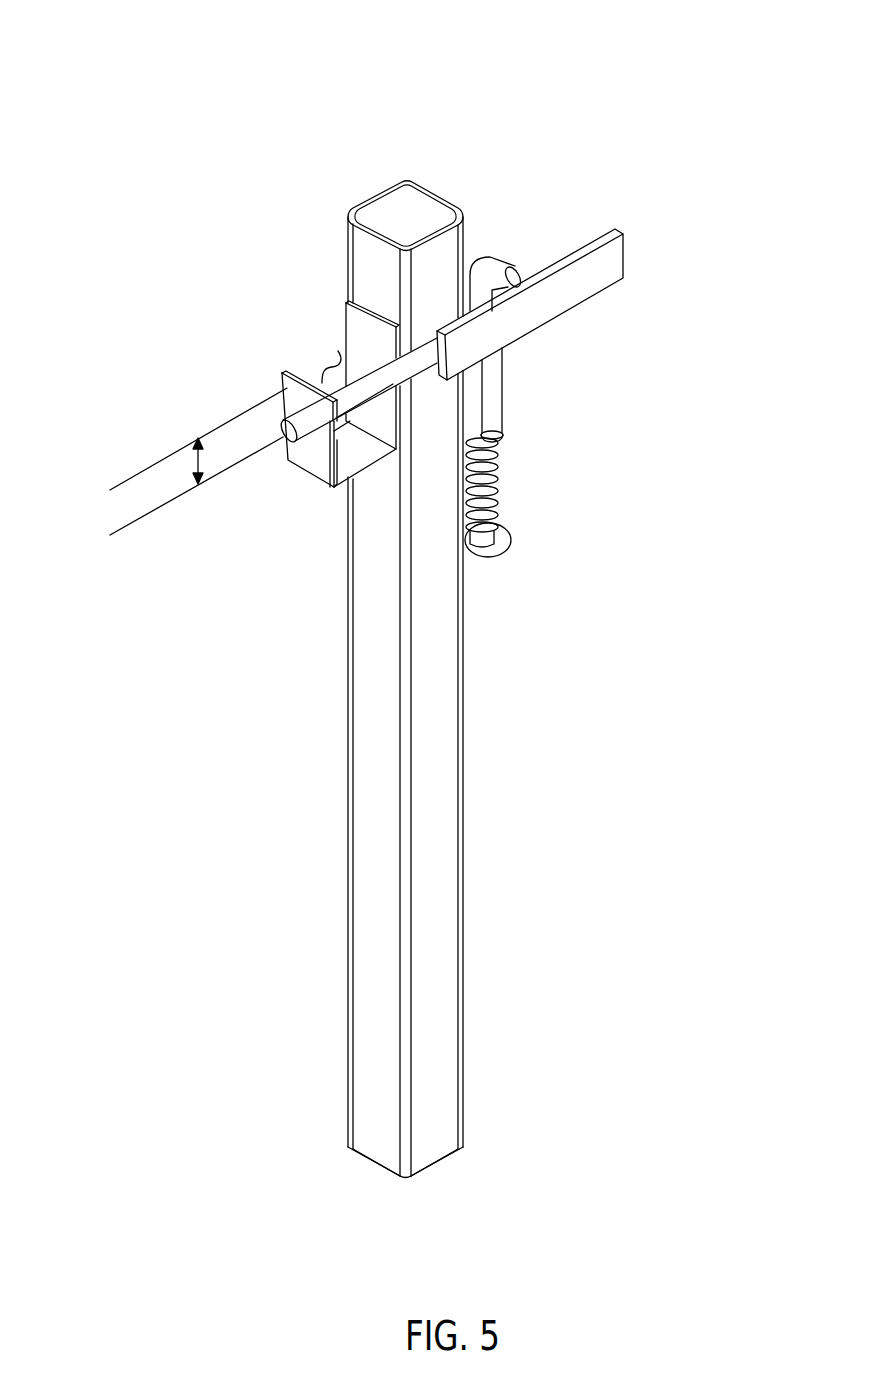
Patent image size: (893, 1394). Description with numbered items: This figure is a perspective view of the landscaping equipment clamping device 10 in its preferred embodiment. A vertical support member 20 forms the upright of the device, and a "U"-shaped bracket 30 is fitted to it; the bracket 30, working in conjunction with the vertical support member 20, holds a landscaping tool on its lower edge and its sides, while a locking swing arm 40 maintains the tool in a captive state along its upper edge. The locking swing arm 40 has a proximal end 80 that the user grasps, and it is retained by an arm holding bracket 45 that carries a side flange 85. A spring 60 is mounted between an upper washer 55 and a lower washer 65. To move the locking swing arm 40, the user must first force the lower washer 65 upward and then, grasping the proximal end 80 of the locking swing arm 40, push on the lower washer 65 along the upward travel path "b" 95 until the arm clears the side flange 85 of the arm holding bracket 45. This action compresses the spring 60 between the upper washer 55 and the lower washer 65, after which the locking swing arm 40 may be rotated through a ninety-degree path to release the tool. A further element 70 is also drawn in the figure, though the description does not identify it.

The landscaping equipment clamping device 10 is at (143, 186).
The vertical support member 20 is at (440, 270).
The "U"-shaped bracket 30 is at (300, 458).
The locking swing arm 40 is at (552, 313).
The arm holding bracket 45 is at (437, 372).
The upper washer 55 is at (503, 432).
The spring 60 is at (495, 497).
The lower washer 65 is at (493, 543).
The clip 70 is at (328, 362).
The proximal end 80 is at (285, 434).
The side flange 85 is at (498, 411).
The upward travel path "b" 95 is at (192, 451).